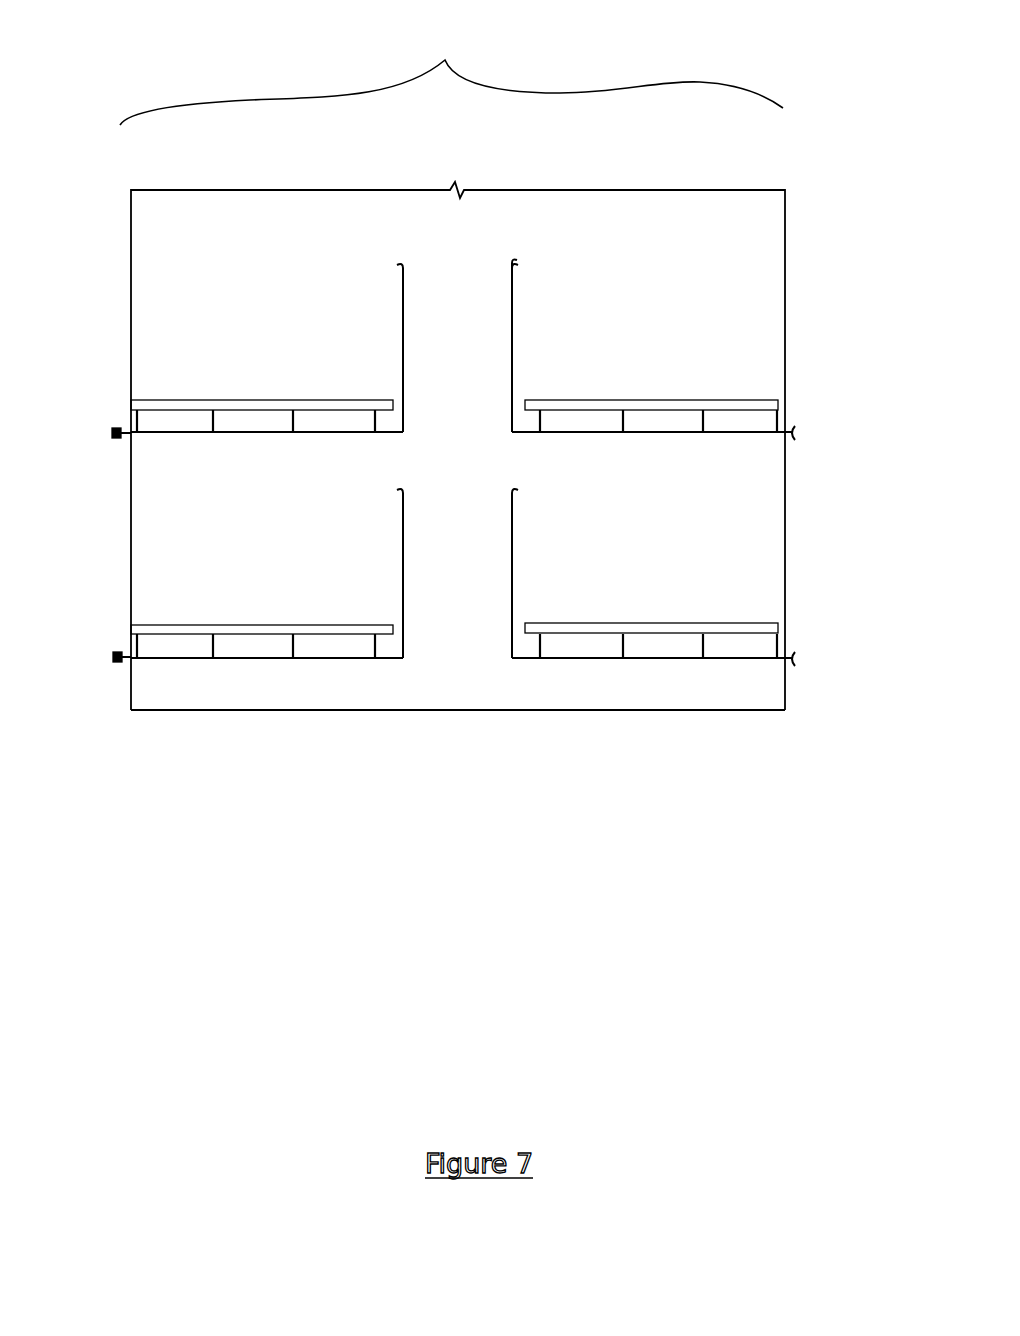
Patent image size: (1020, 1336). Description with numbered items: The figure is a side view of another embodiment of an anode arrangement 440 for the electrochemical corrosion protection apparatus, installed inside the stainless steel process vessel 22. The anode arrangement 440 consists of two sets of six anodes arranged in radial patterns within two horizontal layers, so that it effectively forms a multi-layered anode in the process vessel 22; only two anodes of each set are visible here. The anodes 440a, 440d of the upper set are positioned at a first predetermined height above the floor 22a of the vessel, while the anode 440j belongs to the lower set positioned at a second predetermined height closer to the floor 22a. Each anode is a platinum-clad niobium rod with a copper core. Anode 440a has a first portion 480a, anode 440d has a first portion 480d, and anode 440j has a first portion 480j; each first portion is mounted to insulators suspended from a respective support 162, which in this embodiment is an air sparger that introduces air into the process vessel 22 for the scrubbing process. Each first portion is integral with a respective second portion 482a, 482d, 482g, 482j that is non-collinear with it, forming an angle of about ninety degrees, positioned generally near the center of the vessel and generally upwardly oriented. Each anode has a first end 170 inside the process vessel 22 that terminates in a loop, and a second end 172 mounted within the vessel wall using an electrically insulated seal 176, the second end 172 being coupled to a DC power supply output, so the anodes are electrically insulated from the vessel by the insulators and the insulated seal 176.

The stainless steel process vessel 22 is at (131, 225).
The floor 22a is at (148, 700).
The anode arrangement 440 is at (451, 73).
The second portion 482g is at (392, 290).
The second portion 482j is at (525, 325).
The second portion 482a is at (392, 567).
The second portion 482d is at (525, 547).
The first end 170 is at (532, 268).
The support 162 is at (732, 398).
The second end 172 is at (100, 410).
The electrically insulated seal 176 is at (125, 434).
The anode 440a is at (248, 660).
The anode 440j is at (723, 405).
The anode 440d is at (672, 660).
The first portion 480a is at (265, 668).
The first portion 480j is at (672, 444).
The first portion 480d is at (657, 668).